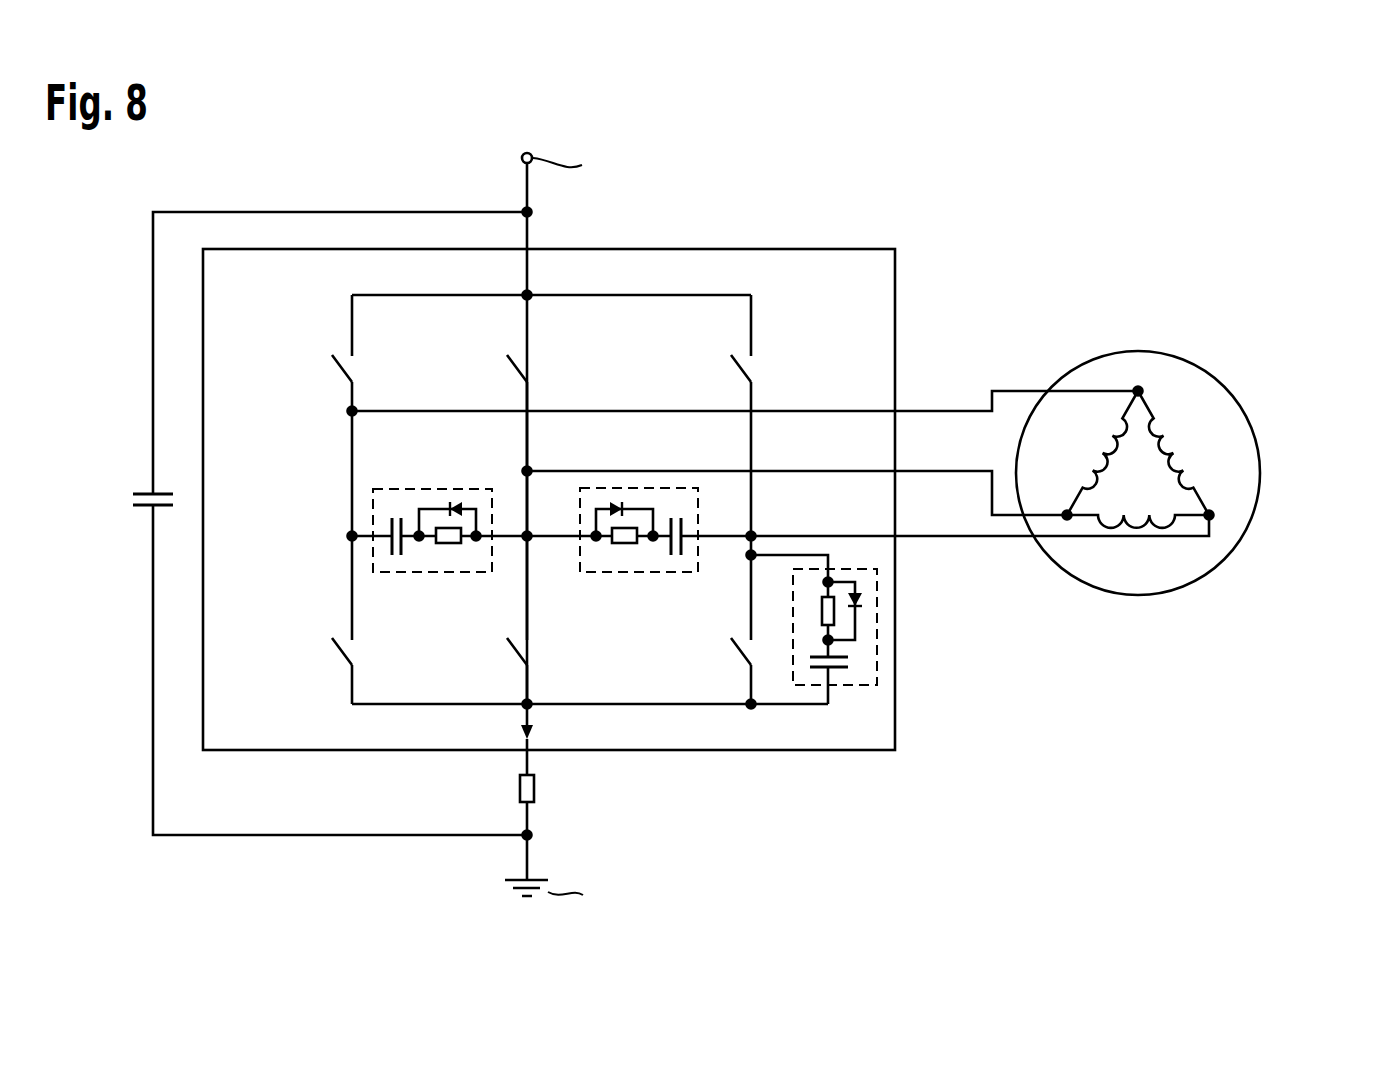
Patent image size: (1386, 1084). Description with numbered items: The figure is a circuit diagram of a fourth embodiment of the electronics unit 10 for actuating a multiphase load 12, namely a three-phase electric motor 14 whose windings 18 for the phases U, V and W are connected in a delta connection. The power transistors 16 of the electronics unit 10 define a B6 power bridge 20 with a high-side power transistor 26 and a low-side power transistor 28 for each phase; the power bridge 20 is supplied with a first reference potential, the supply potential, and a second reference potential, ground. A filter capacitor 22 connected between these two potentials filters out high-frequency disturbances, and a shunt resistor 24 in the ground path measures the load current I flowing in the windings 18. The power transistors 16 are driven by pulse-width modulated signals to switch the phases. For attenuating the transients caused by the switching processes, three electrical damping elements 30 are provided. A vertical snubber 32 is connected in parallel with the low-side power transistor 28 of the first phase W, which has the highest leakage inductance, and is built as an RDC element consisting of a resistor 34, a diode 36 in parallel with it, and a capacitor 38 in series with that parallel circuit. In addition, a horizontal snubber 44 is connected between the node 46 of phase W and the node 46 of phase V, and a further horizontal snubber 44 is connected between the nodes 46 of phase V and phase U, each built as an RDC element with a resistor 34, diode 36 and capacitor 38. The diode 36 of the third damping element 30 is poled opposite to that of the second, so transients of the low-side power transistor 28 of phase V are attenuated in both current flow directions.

The electronics unit 10 is at (960, 220).
The multiphase load 12 is at (1232, 358).
The electric motor 14 is at (1139, 473).
The power transistors 16 is at (489, 519).
The windings 18 is at (1090, 446).
The power bridge 20 is at (720, 276).
The filter capacitor 22 is at (139, 508).
The shunt resistor 24 is at (535, 788).
The high-side power transistor 26 is at (735, 374).
The low-side power transistor 28 is at (735, 657).
The electrical damping element 30 is at (677, 610).
The vertical snubber 32 is at (857, 688).
The resistor 34 is at (445, 546).
The diode 36 is at (457, 506).
The capacitor 38 is at (399, 556).
The horizontal snubber 44 is at (384, 488).
The node 46 is at (350, 533).